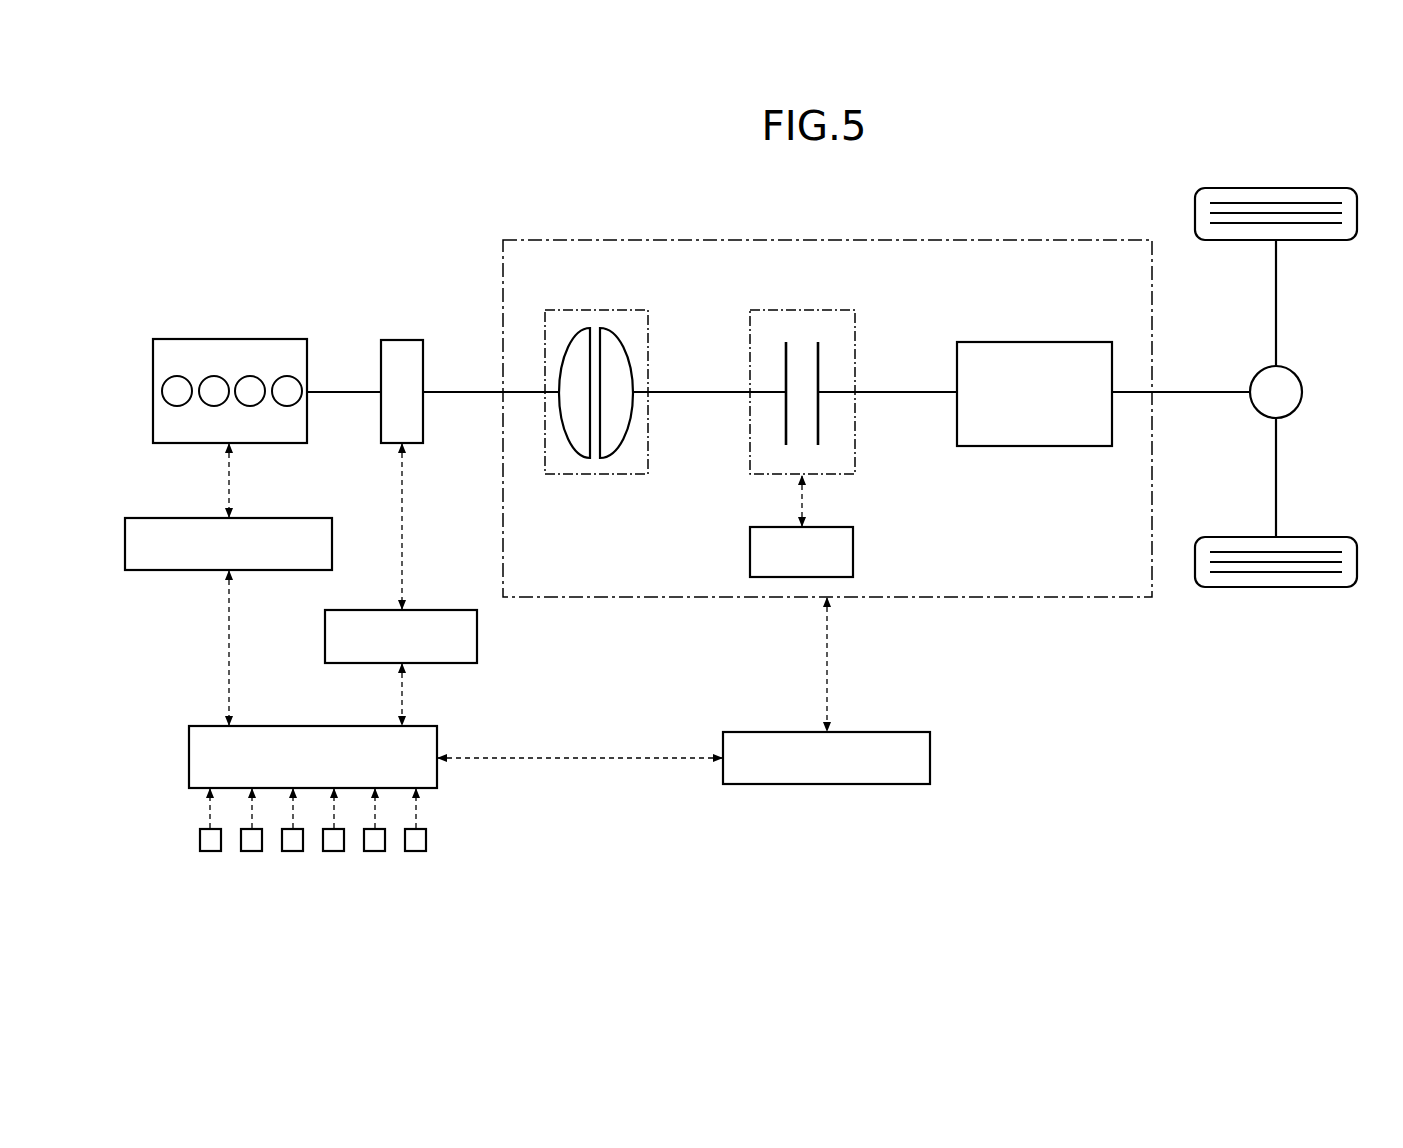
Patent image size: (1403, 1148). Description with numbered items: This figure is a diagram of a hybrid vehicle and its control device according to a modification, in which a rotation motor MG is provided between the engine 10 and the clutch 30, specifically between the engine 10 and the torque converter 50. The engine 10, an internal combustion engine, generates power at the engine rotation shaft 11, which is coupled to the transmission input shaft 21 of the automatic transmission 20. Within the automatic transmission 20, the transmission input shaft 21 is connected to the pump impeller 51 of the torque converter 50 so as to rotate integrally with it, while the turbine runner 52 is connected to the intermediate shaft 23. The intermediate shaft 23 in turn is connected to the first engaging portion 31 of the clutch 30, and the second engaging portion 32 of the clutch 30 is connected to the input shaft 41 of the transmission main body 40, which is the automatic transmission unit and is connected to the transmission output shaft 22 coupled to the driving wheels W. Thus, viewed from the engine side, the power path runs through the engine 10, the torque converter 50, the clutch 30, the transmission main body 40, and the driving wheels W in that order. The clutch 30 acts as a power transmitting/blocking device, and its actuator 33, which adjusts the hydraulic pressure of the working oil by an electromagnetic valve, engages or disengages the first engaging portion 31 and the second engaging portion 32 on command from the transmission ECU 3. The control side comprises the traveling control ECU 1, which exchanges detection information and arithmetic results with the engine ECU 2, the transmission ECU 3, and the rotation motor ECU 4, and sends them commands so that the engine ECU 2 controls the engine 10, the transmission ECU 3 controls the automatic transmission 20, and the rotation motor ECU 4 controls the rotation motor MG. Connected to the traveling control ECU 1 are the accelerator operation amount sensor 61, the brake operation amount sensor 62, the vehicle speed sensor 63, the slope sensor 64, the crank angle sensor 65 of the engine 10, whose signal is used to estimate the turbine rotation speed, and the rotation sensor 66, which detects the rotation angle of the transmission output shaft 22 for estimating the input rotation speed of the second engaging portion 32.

The traveling control ECU 1 is at (304, 726).
The engine ECU 2 is at (311, 518).
The transmission ECU 3 is at (909, 732).
The rotation motor ECU 4 is at (454, 610).
The engine 10 is at (289, 339).
The engine rotation shaft 11 is at (341, 392).
The automatic transmission 20 is at (1093, 240).
The transmission input shaft 21 is at (523, 392).
The transmission output shaft 22 is at (1132, 392).
The intermediate shaft 23 is at (699, 392).
The clutch 30 is at (801, 362).
The first engaging portion 31 is at (786, 418).
The second engaging portion 32 is at (818, 418).
The actuator 33 is at (853, 552).
The transmission main body 40 is at (1081, 342).
The input shaft 41 is at (931, 392).
The torque converter 50 is at (595, 382).
The pump impeller 51 is at (568, 439).
The turbine runner 52 is at (624, 439).
The accelerator operation amount sensor 61 is at (214, 855).
The brake operation amount sensor 62 is at (256, 855).
The vehicle speed sensor 63 is at (297, 855).
The slope sensor 64 is at (338, 855).
The crank angle sensor 65 is at (379, 855).
The rotation sensor 66 is at (420, 855).
The rotation motor MG is at (402, 340).
The driving wheels W is at (1327, 240).